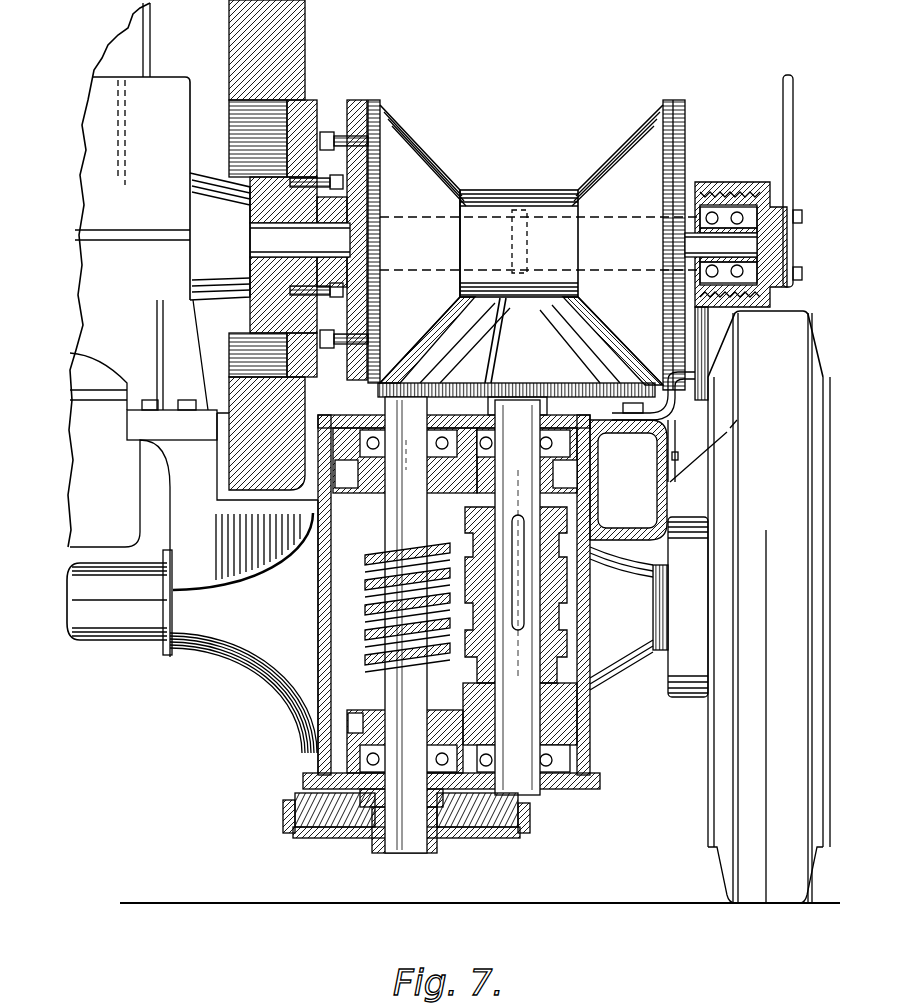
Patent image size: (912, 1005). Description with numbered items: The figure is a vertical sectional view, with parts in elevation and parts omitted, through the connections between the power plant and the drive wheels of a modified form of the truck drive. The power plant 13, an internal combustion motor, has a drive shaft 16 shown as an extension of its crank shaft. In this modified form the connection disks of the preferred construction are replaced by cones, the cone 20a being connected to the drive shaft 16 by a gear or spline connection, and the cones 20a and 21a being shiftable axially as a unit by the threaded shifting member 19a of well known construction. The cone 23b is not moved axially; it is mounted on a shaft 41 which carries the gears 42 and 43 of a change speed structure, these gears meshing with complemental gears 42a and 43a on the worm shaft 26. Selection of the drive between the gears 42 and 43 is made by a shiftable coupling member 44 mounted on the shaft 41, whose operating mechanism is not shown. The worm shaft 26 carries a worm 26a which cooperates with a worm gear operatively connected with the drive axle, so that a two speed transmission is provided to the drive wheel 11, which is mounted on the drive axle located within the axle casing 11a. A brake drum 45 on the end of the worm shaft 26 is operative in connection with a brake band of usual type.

The drive wheel 11 is at (730, 820).
The axle casing 11a is at (113, 632).
The power plant 13 is at (160, 193).
The drive shaft 16 is at (228, 288).
The threaded shifting member 19a is at (728, 193).
The cone 20a is at (438, 170).
The cone 21a is at (623, 163).
The cone 23b is at (520, 347).
The worm shaft 26 is at (405, 520).
The worm 26a is at (375, 630).
The shaft 41 is at (522, 483).
The gear 42 is at (585, 497).
The complemental gear 42a is at (355, 490).
The gear 43 is at (573, 725).
The complemental gear 43a is at (355, 713).
The shiftable coupling member 44 is at (530, 606).
The brake drum 45 is at (350, 836).